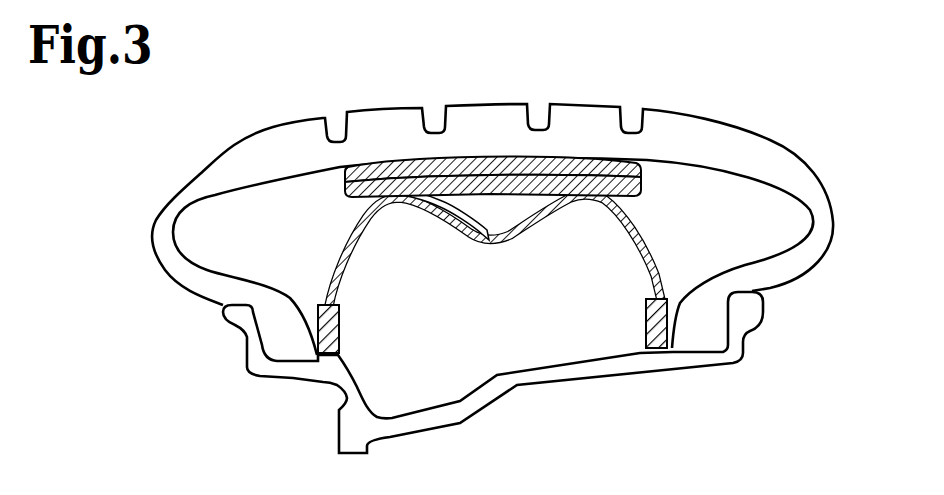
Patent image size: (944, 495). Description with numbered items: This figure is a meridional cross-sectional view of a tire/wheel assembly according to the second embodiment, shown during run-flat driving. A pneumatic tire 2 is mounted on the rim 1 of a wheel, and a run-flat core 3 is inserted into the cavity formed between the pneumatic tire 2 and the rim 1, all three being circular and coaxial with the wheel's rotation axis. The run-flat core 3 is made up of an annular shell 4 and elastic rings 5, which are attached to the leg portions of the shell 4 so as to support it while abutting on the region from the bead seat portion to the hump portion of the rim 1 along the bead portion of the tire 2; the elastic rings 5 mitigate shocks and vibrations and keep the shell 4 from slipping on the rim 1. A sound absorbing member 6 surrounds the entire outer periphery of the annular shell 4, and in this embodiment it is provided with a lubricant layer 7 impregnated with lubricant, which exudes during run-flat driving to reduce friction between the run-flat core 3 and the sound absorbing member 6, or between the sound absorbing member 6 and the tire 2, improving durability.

The rim 1 is at (594, 371).
The pneumatic tire 2 is at (712, 150).
The run-flat core 3 is at (660, 245).
The annular shell 4 is at (616, 222).
The elastic rings 5 is at (343, 326).
The sound absorbing member 6 is at (481, 156).
The lubricant layer 7 is at (596, 157).